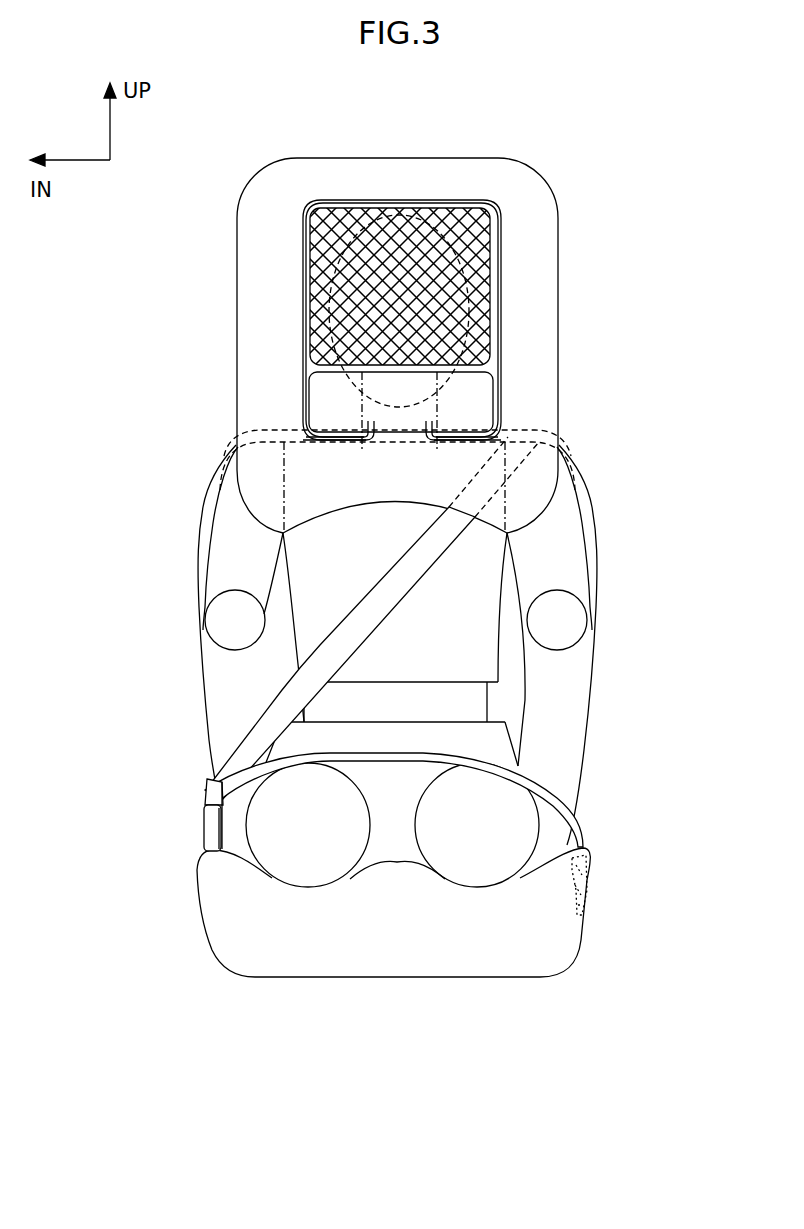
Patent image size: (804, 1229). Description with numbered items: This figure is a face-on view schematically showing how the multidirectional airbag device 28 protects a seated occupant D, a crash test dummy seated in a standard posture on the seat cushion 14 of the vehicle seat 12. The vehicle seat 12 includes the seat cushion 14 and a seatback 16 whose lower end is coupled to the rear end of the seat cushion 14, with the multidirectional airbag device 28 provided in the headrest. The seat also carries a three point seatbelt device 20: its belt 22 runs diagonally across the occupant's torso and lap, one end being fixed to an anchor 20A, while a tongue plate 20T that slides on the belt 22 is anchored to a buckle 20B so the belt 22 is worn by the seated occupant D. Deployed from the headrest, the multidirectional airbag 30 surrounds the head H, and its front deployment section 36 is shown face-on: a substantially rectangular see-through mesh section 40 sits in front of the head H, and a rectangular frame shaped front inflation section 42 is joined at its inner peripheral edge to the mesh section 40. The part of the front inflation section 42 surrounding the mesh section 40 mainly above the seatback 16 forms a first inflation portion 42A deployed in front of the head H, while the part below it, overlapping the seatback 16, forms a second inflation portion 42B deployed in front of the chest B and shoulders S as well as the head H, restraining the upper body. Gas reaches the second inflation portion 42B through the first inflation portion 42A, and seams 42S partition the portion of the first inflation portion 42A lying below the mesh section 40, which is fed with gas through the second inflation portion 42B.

The vehicle seat 12 is at (187, 492).
The seat cushion 14 is at (515, 960).
The seatback 16 is at (198, 567).
The seatbelt device 20 is at (223, 726).
The anchor 20A is at (583, 897).
The buckle 20B is at (207, 833).
The tongue plate 20T is at (205, 800).
The belt 22 is at (394, 627).
The multidirectional airbag device 28 is at (593, 170).
The multidirectional airbag 30 is at (472, 345).
The front deployment section 36 is at (579, 222).
The mesh section 40 is at (457, 220).
The front inflation section 42 is at (148, 357).
The first inflation portion 42A is at (523, 282).
The second inflation portion 42B is at (263, 503).
The seams 42S is at (340, 433).
The head H is at (408, 228).
The shoulders S is at (267, 468).
The chest B is at (390, 492).
The seated occupant D is at (198, 536).